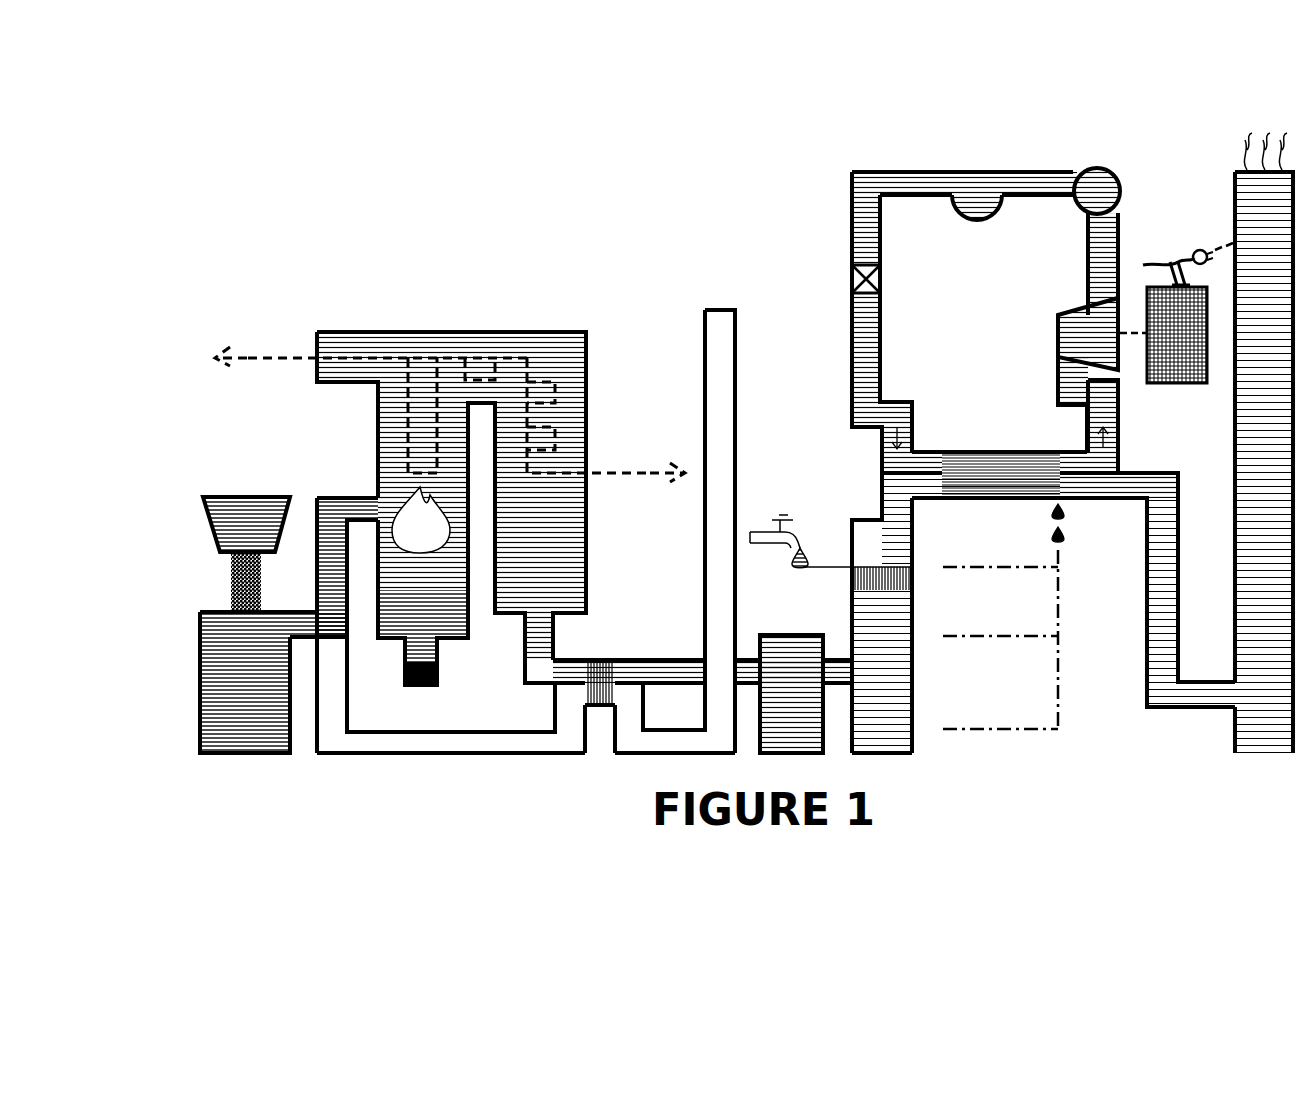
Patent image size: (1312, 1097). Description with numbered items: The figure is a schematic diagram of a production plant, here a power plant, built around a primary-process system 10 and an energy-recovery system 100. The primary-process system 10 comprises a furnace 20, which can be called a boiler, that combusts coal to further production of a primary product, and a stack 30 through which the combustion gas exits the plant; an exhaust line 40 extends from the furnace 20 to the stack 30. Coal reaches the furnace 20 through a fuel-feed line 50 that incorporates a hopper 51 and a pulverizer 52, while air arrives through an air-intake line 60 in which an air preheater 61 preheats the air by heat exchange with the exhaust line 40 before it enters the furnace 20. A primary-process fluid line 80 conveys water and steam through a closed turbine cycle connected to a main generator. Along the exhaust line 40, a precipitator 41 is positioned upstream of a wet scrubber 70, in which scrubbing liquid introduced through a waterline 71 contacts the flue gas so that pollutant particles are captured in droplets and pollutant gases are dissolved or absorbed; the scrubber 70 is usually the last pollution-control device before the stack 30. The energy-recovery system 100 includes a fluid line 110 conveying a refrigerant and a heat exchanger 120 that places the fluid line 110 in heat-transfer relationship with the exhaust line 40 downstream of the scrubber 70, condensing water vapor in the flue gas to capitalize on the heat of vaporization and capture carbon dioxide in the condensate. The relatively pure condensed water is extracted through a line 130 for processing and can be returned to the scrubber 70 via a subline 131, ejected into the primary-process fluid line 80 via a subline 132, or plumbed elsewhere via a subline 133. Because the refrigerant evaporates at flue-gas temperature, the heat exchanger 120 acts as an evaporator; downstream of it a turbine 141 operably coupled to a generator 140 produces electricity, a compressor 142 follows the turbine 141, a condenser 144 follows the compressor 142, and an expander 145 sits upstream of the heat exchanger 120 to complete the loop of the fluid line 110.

The primary-process system 10 is at (348, 257).
The furnace 20 is at (393, 521).
The stack 30 is at (1252, 417).
The exhaust line 40 is at (688, 648).
The precipitator 41 is at (791, 684).
The fuel-feed line 50 is at (245, 484).
The hopper 51 is at (246, 524).
The pulverizer 52 is at (273, 682).
The air-intake line 60 is at (720, 298).
The air preheater 61 is at (600, 706).
The wet scrubber 70 is at (831, 613).
The waterline 71 is at (857, 579).
The primary-process fluid line 80 is at (473, 420).
The energy-recovery system 100 is at (822, 166).
The fluid line 110 is at (985, 299).
The heat exchanger 120 is at (995, 437).
The line 130 is at (1038, 613).
The subline 131 is at (1003, 567).
The subline 132 is at (1003, 637).
The subline 133 is at (1003, 718).
The generator 140 is at (1188, 324).
The turbine 141 is at (1102, 334).
The compressor 142 is at (1121, 191).
The condenser 144 is at (977, 184).
The expander 145 is at (845, 278).